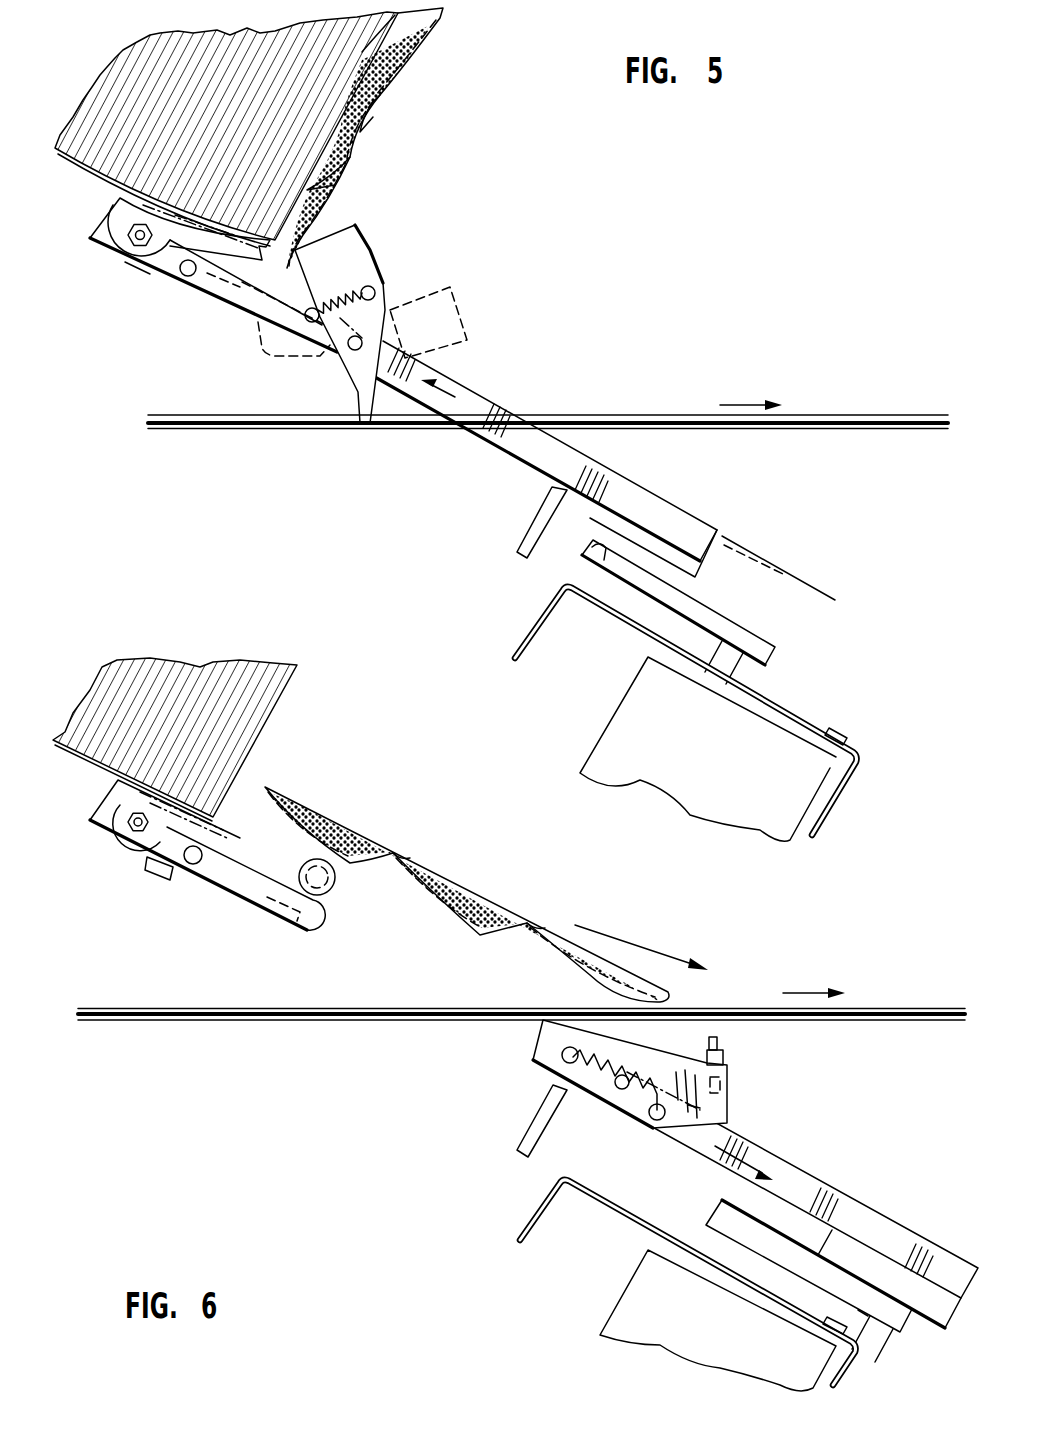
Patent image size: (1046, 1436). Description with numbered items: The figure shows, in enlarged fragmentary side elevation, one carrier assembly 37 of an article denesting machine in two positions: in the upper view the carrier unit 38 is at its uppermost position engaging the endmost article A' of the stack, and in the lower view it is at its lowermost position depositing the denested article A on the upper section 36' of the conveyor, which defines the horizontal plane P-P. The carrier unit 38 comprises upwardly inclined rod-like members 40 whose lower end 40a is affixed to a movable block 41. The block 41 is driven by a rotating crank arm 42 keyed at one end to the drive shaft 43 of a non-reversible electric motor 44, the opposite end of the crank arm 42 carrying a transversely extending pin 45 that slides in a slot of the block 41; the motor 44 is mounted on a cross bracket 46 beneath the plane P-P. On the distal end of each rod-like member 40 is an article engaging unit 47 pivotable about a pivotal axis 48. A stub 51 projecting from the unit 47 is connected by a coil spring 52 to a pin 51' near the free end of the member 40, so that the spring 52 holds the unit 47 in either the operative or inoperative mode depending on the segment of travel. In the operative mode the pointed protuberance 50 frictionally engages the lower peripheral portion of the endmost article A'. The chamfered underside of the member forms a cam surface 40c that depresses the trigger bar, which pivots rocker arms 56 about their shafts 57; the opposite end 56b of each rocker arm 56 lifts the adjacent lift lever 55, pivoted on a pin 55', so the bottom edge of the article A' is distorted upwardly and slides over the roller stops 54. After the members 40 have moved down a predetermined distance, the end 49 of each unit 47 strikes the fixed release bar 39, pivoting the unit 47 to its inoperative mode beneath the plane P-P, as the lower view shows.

In FIG. 5, the article A is at (266, 129).
In FIG. 6, the article A is at (380, 805).
In FIG. 5, the endmost article A' is at (386, 138).
In FIG. 5, the upper section of conveyor 36' is at (548, 391).
In FIG. 6, the upper section of conveyor 36' is at (521, 1029).
In FIG. 5, the carrier assembly 37 is at (705, 472).
In FIG. 5, the carrier unit 38 is at (492, 464).
In FIG. 5, the release bar 39 is at (552, 522).
In FIG. 6, the release bar 39 is at (533, 1115).
In FIG. 5, the rod-like member 40 is at (478, 372).
In FIG. 6, the rod-like member 40 is at (818, 1160).
In FIG. 5, the lower end of rod-like member 40a is at (705, 525).
In FIG. 5, the cam surface 40c is at (267, 327).
In FIG. 5, the movable block 41 is at (682, 570).
In FIG. 6, the movable block 41 is at (840, 1250).
In FIG. 5, the crank arm 42 is at (760, 642).
In FIG. 6, the crank arm 42 is at (830, 1280).
In FIG. 5, the drive shaft 43 is at (735, 672).
In FIG. 5, the electric motor 44 is at (712, 760).
In FIG. 6, the electric motor 44 is at (669, 1313).
In FIG. 5, the pin 45 is at (590, 555).
In FIG. 6, the pin 45 is at (893, 1313).
In FIG. 5, the cross bracket 46 is at (540, 613).
In FIG. 6, the cross bracket 46 is at (550, 1213).
In FIG. 5, the article engaging unit 47 is at (394, 262).
In FIG. 6, the article engaging unit 47 is at (752, 1094).
In FIG. 5, the pivotal axis 48 is at (390, 335).
In FIG. 6, the pivotal axis 48 is at (660, 1048).
In FIG. 5, the end of unit 49 is at (362, 427).
In FIG. 6, the end of unit 49 is at (537, 1060).
In FIG. 5, the pointed protuberance 50 is at (273, 292).
In FIG. 6, the pointed protuberance 50 is at (717, 1040).
In FIG. 6, the stub 51 is at (645, 1149).
In FIG. 5, the pin 51' is at (261, 369).
In FIG. 6, the coil spring 52 is at (627, 1115).
In FIG. 6, the roller stops 54 is at (340, 893).
In FIG. 5, the lift lever 55 is at (180, 200).
In FIG. 6, the lift lever 55 is at (171, 855).
In FIG. 5, the pin 55' is at (96, 258).
In FIG. 5, the rocker arm 56 is at (232, 306).
In FIG. 6, the rocker arm 56 is at (240, 890).
In FIG. 5, the opposite end of rocker arm 56b is at (135, 268).
In FIG. 5, the shaft 57 is at (182, 272).
In FIG. 6, the shaft 57 is at (182, 855).
In FIG. 5, the horizontal plane P-P is at (645, 415).
In FIG. 6, the horizontal plane P-P is at (900, 1008).